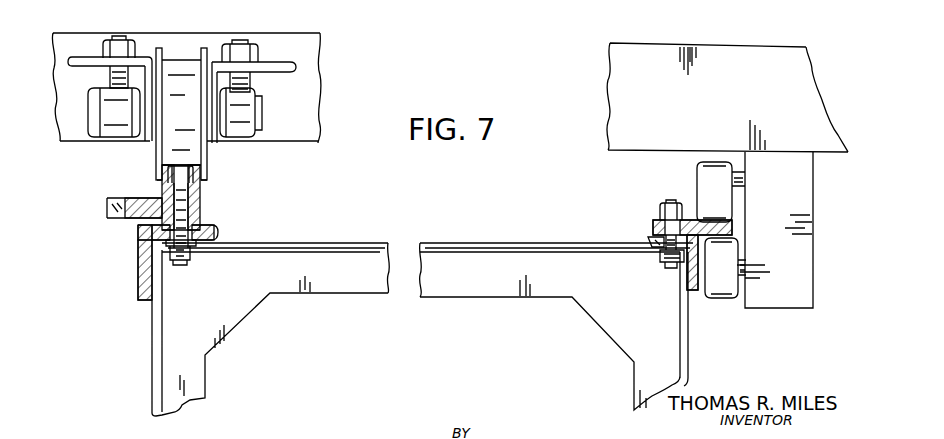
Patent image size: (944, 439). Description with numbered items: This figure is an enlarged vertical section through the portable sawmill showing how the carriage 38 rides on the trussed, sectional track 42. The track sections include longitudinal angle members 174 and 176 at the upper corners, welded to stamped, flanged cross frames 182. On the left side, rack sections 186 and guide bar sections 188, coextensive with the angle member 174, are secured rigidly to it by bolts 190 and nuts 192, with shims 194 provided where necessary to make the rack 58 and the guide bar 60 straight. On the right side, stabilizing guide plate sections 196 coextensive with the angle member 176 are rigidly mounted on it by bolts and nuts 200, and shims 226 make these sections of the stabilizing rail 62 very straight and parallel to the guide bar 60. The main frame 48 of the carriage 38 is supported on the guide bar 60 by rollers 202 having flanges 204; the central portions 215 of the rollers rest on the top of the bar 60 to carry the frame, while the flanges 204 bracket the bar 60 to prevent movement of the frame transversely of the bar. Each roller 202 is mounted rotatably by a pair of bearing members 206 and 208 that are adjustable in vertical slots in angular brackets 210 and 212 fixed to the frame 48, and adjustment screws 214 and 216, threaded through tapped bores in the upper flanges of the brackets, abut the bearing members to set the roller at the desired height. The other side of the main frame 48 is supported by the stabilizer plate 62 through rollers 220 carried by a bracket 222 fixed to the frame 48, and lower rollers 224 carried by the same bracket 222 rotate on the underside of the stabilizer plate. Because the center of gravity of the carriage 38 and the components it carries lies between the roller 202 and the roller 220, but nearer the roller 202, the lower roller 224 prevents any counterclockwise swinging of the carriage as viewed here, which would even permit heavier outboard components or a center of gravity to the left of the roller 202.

The carriage 38 is at (634, 40).
The track 42 is at (148, 326).
The main frame 48 is at (696, 44).
The rack 58 is at (131, 224).
The guide bar 60 is at (205, 191).
The stabilizing rail 62 is at (688, 217).
The longitudinal angle member 174 is at (138, 283).
The longitudinal angle member 176 is at (690, 280).
The cross frame 182 is at (533, 243).
The rack section 186 is at (157, 201).
The guide bar section 188 is at (195, 176).
The bolt 190 is at (196, 208).
The nut 192 is at (194, 246).
The shim 194 is at (197, 214).
The stabilizing guide plate section 196 is at (663, 206).
The nut 200 is at (662, 251).
The roller 202 is at (180, 52).
The flange 204 is at (157, 50).
The bearing member 206 is at (100, 141).
The bearing member 208 is at (257, 113).
The angular bracket 210 is at (80, 60).
The angular bracket 212 is at (270, 72).
The adjustment screw 214 is at (119, 40).
The central portion 215 is at (173, 144).
The adjustment screw 216 is at (240, 42).
The roller 220 is at (736, 176).
The bracket 222 is at (798, 303).
The lower roller 224 is at (722, 298).
The shim 226 is at (654, 234).